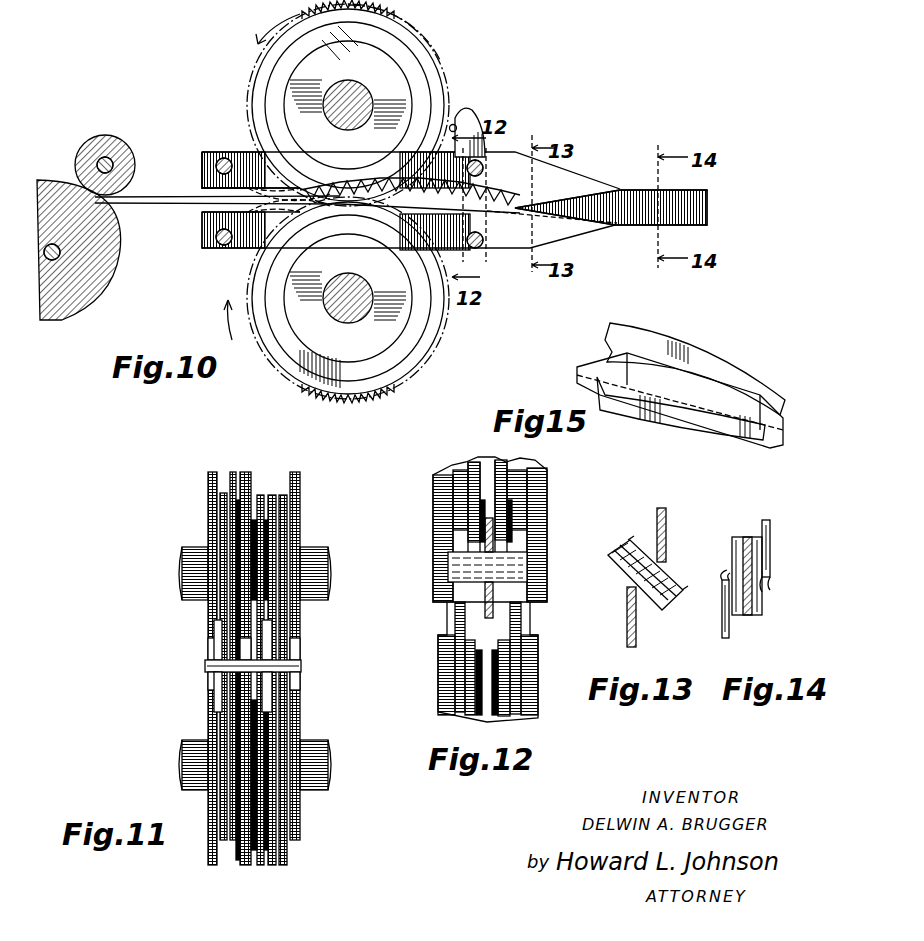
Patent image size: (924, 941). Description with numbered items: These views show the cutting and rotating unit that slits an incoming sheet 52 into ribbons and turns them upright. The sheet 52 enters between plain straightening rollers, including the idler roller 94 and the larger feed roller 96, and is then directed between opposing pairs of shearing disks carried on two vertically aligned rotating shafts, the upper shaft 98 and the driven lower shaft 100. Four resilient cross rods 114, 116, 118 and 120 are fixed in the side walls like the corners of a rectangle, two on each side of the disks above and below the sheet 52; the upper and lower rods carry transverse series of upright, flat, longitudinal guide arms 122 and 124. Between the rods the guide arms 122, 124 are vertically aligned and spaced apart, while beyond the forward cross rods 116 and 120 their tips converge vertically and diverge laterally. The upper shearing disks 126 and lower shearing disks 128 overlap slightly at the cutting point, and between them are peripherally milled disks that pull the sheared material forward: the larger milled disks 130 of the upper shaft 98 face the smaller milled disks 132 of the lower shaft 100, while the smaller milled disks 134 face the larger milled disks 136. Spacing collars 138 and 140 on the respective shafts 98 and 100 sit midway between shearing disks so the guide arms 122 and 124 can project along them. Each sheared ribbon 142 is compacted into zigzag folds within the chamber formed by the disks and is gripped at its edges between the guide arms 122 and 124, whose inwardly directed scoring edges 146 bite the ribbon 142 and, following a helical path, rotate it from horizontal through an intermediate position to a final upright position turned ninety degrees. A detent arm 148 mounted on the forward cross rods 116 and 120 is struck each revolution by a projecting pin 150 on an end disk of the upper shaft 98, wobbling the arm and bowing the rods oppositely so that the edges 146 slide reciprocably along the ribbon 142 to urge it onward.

In FIG. 10, the sheet 52 is at (180, 205).
In FIG. 10, the straightening roller 94 is at (88, 146).
In FIG. 10, the feed roller 96 is at (98, 283).
In FIG. 10, the upper shaft 98 is at (372, 95).
In FIG. 11, the upper shaft 98 is at (315, 548).
In FIG. 10, the lower shaft 100 is at (368, 310).
In FIG. 11, the lower shaft 100 is at (330, 788).
In FIG. 10, the cross rod 114 is at (226, 157).
In FIG. 10, the forward cross rod 116 is at (480, 160).
In FIG. 10, the cross rod 118 is at (226, 247).
In FIG. 10, the forward cross rod 120 is at (480, 250).
In FIG. 10, the upper guide arm 122 is at (502, 160).
In FIG. 15, the upper guide arm 122 is at (672, 352).
In FIG. 11, the upper guide arm 122 is at (214, 648).
In FIG. 12, the upper guide arm 122 is at (505, 530).
In FIG. 13, the upper guide arm 122 is at (657, 520).
In FIG. 14, the upper guide arm 122 is at (770, 525).
In FIG. 10, the lower guide arm 124 is at (515, 258).
In FIG. 15, the lower guide arm 124 is at (695, 430).
In FIG. 11, the lower guide arm 124 is at (214, 700).
In FIG. 12, the lower guide arm 124 is at (530, 618).
In FIG. 13, the lower guide arm 124 is at (627, 626).
In FIG. 14, the lower guide arm 124 is at (722, 630).
In FIG. 11, the upper shearing disk 126 is at (208, 660).
In FIG. 12, the upper shearing disk 126 is at (547, 568).
In FIG. 11, the lower shearing disk 128 is at (208, 680).
In FIG. 12, the lower shearing disk 128 is at (547, 612).
In FIG. 10, the larger milled disk 130 is at (430, 80).
In FIG. 11, the larger milled disk 130 is at (214, 472).
In FIG. 11, the smaller milled disk 132 is at (222, 842).
In FIG. 10, the smaller milled disk 134 is at (388, 38).
In FIG. 11, the smaller milled disk 134 is at (278, 495).
In FIG. 10, the larger milled disk 136 is at (396, 365).
In FIG. 11, the larger milled disk 136 is at (292, 862).
In FIG. 11, the spacing collar 138 is at (233, 472).
In FIG. 11, the spacing collar 140 is at (242, 866).
In FIG. 10, the ribbon 142 is at (712, 215).
In FIG. 15, the ribbon 142 is at (785, 440).
In FIG. 11, the ribbon 142 is at (212, 672).
In FIG. 12, the ribbon 142 is at (460, 572).
In FIG. 13, the ribbon 142 is at (665, 560).
In FIG. 14, the ribbon 142 is at (732, 548).
In FIG. 13, the scoring edge 146 is at (626, 545).
In FIG. 14, the scoring edge 146 is at (732, 580).
In FIG. 10, the detent arm 148 is at (470, 112).
In FIG. 10, the projecting pin 150 is at (458, 124).